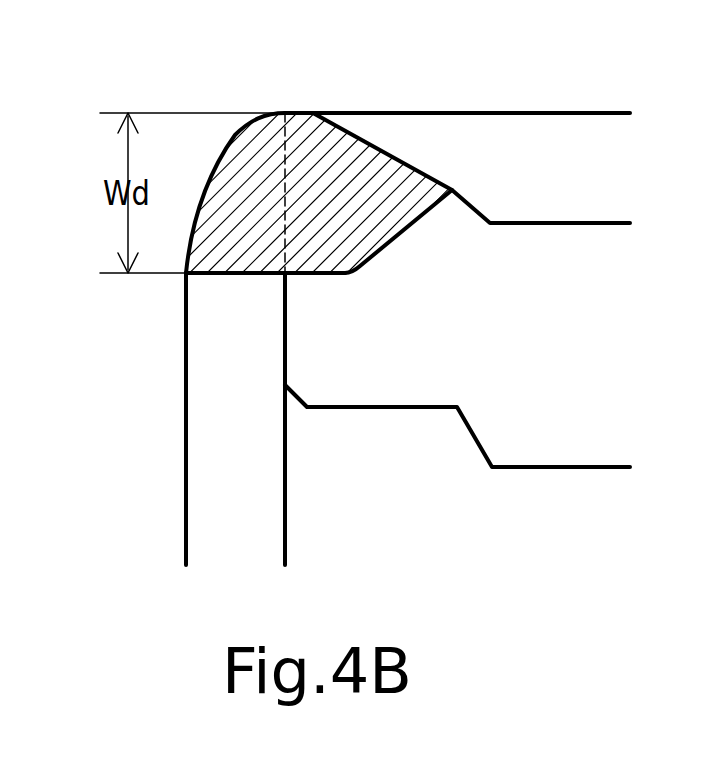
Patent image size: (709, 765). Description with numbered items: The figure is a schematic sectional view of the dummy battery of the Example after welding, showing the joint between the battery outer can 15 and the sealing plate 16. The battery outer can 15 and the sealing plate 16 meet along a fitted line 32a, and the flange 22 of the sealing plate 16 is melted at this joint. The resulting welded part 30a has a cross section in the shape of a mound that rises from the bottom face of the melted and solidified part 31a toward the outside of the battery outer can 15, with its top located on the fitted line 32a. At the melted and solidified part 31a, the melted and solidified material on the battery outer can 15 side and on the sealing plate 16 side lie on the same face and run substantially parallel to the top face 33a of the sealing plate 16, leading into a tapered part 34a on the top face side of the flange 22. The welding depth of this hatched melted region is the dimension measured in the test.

The battery outer can 15 is at (218, 452).
The sealing plate 16 is at (528, 352).
The flange 22 is at (365, 317).
The welded part 30a is at (247, 167).
The melted and solidified part 31a is at (249, 275).
The fitted line 32a is at (288, 340).
The top face 33a is at (203, 112).
The tapered part 34a is at (452, 190).